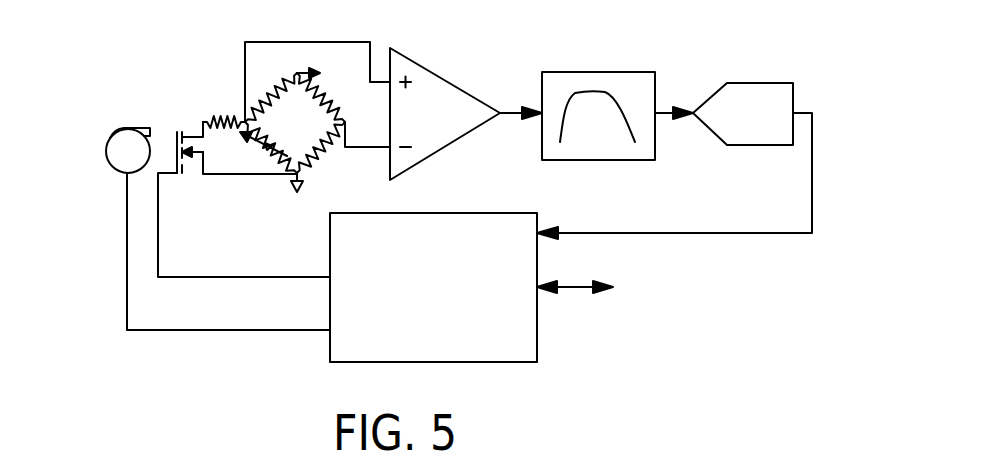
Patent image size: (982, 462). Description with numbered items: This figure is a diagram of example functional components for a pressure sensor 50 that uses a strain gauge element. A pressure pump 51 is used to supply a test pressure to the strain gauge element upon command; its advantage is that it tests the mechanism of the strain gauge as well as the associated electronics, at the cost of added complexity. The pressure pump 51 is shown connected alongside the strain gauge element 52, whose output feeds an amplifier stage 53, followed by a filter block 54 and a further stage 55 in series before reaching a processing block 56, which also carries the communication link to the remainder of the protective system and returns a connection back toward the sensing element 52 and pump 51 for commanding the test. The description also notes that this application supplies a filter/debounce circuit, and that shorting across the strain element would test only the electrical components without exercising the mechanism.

The pressure sensor 50 is at (140, 372).
The pressure pump 51 is at (106, 152).
The bridge network 52 is at (297, 125).
The amplifier 53 is at (443, 81).
The filter 54 is at (607, 78).
The analog to digital converter 55 is at (745, 88).
The microprocessor 56 is at (525, 344).